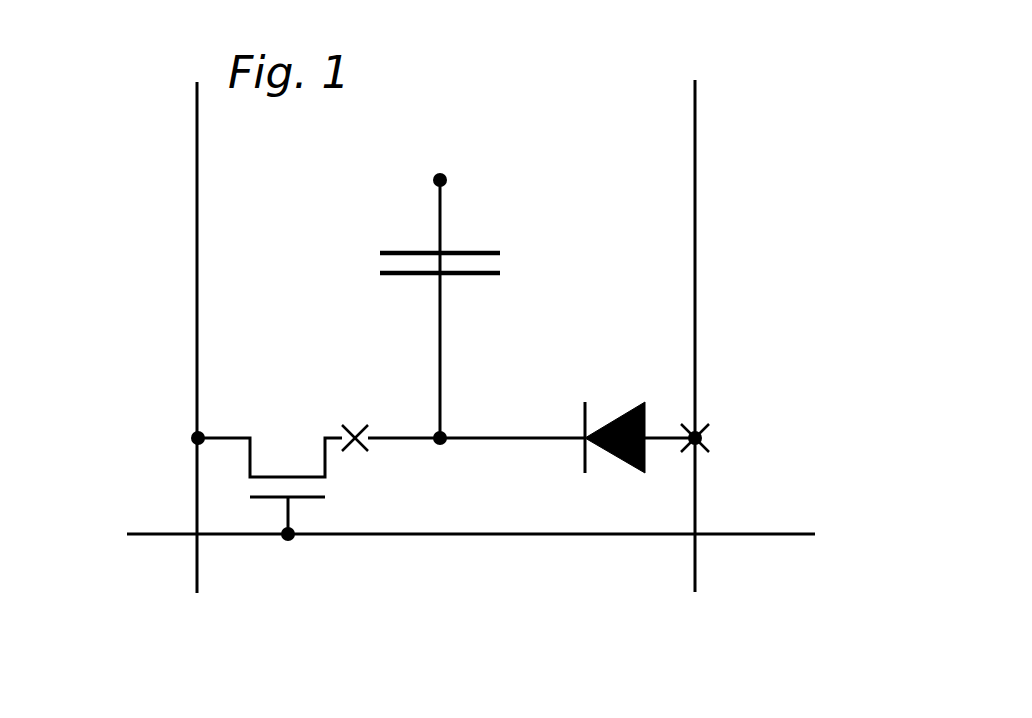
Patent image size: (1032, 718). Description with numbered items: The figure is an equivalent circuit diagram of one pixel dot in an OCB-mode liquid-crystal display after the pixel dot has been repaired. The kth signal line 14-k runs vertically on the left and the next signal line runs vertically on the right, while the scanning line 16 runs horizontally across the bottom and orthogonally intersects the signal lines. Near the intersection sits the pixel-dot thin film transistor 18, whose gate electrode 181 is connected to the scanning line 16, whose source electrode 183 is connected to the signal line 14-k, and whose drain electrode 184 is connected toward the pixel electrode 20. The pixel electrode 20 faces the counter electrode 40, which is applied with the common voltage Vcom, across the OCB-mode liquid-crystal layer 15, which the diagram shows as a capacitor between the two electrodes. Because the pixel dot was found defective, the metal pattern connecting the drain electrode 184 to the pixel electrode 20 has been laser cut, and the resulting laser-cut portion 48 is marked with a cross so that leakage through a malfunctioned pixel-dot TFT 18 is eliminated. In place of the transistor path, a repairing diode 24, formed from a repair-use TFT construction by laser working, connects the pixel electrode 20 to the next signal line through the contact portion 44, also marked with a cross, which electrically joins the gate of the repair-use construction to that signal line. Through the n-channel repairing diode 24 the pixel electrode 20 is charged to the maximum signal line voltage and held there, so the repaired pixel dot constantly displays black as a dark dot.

The kth signal line 14-k is at (197, 158).
The scanning line 16 is at (143, 535).
The pixel-dot thin film transistor 18 is at (290, 433).
The gate electrode 181 is at (292, 541).
The source electrode 183 is at (191, 440).
The drain electrode 184 is at (438, 433).
The laser-cut portion 48 is at (372, 452).
The OCB-mode liquid-crystal layer 15 is at (502, 275).
The counter electrode 40 is at (460, 255).
The pixel electrode 20 is at (460, 275).
The repairing diode 24 is at (625, 480).
The contact portion 44 is at (712, 418).